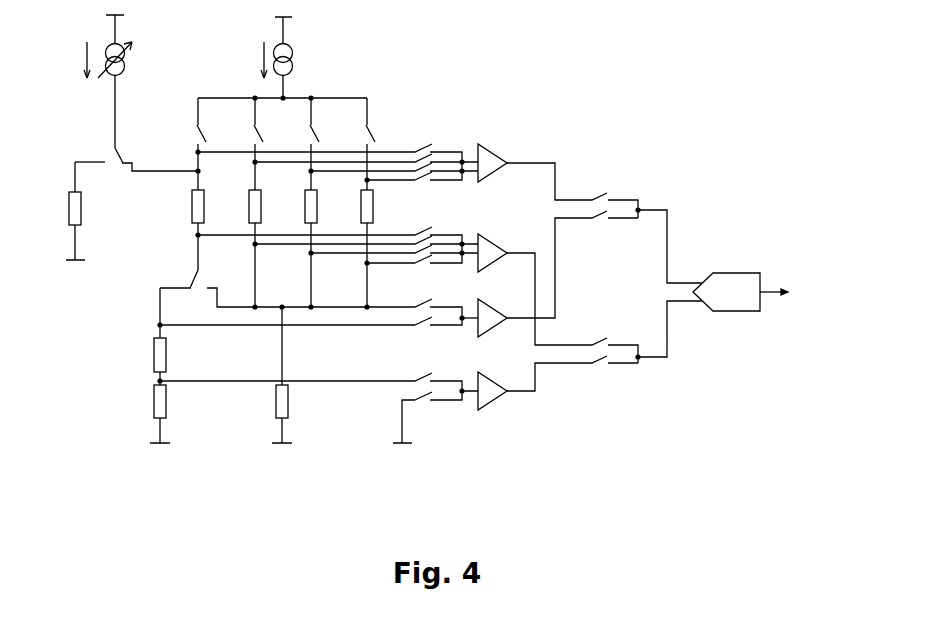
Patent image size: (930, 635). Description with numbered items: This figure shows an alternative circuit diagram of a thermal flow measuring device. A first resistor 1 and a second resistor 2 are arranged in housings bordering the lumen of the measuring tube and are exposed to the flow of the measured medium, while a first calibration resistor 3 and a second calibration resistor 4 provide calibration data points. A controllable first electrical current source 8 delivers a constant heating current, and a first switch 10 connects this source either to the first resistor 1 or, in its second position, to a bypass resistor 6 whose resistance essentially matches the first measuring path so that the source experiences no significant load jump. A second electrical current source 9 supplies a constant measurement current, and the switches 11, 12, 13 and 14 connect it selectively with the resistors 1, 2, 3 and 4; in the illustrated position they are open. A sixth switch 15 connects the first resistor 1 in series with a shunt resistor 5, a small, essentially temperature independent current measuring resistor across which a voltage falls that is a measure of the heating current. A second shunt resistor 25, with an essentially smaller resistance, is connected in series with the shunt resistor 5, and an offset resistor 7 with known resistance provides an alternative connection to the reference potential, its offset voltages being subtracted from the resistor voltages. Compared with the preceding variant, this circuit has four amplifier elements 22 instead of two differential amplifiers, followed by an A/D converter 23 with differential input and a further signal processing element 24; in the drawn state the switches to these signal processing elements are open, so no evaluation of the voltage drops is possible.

The first resistor 1 is at (204, 205).
The second resistor 2 is at (261, 205).
The first calibration resistor 3 is at (317, 205).
The second calibration resistor 4 is at (373, 205).
The shunt resistor 5 is at (167, 352).
The bypass resistor 6 is at (82, 205).
The offset resistor 7 is at (289, 398).
The first electrical current source 8 is at (124, 56).
The second electrical current source 9 is at (291, 56).
The first switch 10 is at (124, 149).
The second switch 11 is at (204, 130).
The switch 12 is at (261, 130).
The switch 13 is at (317, 130).
The switch 14 is at (373, 130).
The sixth switch 15 is at (195, 280).
The amplifier 22 is at (490, 163).
The A/D converter 23 is at (757, 277).
The signal processing element 24 is at (814, 298).
The second shunt resistor 25 is at (167, 398).